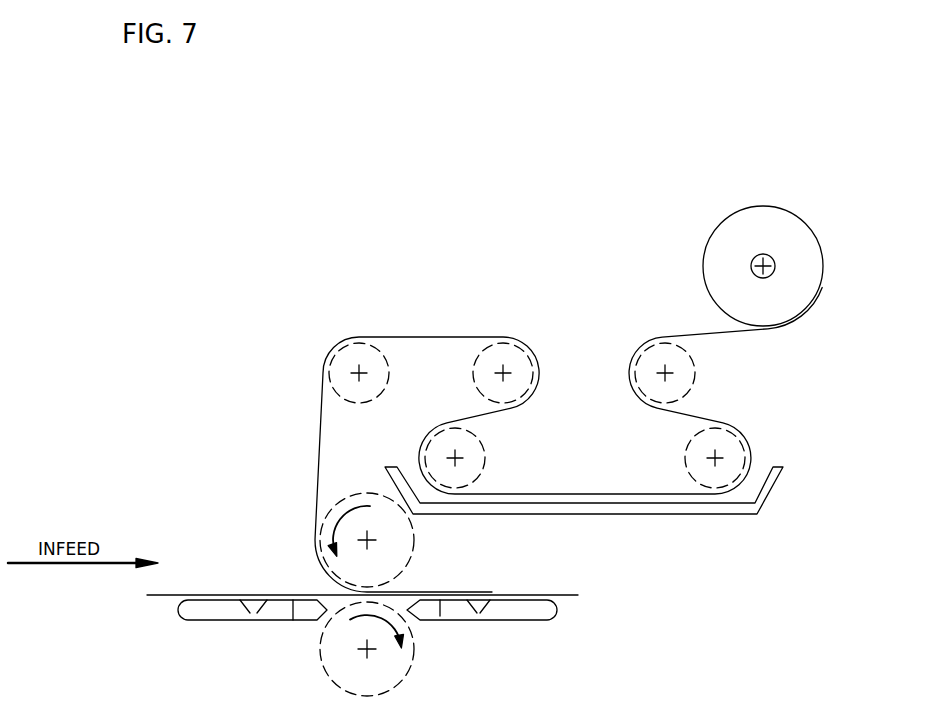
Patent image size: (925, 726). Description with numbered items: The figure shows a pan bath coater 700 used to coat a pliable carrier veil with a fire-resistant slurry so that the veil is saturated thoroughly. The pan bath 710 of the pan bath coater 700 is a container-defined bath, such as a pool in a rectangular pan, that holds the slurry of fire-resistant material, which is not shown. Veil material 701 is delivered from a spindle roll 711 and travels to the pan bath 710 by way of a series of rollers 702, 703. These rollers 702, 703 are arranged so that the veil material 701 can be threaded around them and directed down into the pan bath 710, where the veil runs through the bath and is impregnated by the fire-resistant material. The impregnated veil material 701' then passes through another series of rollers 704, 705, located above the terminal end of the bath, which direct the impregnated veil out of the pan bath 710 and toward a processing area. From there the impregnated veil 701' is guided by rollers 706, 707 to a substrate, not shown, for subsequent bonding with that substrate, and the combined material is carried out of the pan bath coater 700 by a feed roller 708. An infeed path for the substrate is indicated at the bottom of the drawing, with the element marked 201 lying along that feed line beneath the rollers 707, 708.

The pan bath coater 700 is at (385, 245).
The veil material 701 is at (763, 234).
The impregnated veil material 701' is at (568, 437).
The spindle roll 711 is at (752, 260).
The roller 702 is at (697, 373).
The roller 703 is at (687, 458).
The roller 704 is at (485, 457).
The roller 705 is at (472, 374).
The roller 706 is at (359, 403).
The roller 707 is at (415, 540).
The feed roller 708 is at (412, 645).
The pan bath 710 is at (762, 493).
The conveyor 201 is at (548, 595).